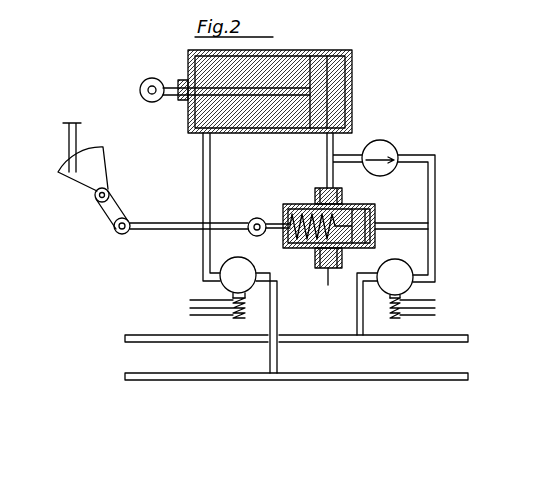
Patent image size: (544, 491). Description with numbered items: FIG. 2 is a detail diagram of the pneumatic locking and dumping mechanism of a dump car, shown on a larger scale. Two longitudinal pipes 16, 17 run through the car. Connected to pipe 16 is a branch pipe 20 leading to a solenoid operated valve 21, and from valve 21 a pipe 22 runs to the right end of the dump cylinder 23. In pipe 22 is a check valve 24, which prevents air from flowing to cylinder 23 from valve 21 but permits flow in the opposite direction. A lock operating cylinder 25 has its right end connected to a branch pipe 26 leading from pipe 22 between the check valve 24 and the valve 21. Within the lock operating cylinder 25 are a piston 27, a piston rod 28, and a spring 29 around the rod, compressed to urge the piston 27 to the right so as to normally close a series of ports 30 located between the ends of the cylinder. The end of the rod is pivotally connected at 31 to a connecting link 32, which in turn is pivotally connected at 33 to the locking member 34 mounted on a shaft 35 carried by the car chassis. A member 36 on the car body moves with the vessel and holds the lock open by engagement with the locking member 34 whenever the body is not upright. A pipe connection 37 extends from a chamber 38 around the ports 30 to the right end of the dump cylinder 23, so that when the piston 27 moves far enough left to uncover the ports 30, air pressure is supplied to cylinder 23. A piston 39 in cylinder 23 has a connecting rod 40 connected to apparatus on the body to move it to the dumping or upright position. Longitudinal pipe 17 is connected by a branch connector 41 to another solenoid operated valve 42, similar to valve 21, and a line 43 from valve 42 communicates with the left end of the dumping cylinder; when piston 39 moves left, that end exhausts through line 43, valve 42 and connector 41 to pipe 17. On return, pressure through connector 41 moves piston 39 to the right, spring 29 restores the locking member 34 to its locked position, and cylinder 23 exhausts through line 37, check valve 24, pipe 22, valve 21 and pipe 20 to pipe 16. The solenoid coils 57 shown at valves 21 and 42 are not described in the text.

The longitudinal pipe 16 is at (140, 335).
The longitudinal pipe 17 is at (140, 373).
The branch pipe 20 is at (357, 302).
The solenoid operated valve 21 is at (386, 255).
The pipe 22 is at (437, 192).
The dump cylinder 23 is at (352, 100).
The check valve 24 is at (378, 140).
The lock operating cylinder 25 is at (305, 197).
The branch pipe 26 is at (383, 224).
The piston 27 is at (358, 215).
The piston rod 28 is at (270, 222).
The spring 29 is at (322, 243).
The ports 30 is at (352, 209).
The pivotal connection 31 is at (257, 218).
The connecting link 32 is at (172, 232).
The pivotal connection 33 is at (115, 230).
The locking member 34 is at (104, 160).
The shaft 35 is at (95, 196).
The member 36 is at (67, 137).
The pipe connection 37 is at (327, 152).
The chamber 38 is at (318, 188).
The piston 39 is at (327, 73).
The connecting rod 40 is at (170, 80).
The branch connector 41 is at (277, 318).
The solenoid operated valve 42 is at (245, 258).
The line 43 is at (203, 182).
The solenoid coil 57 is at (190, 302).